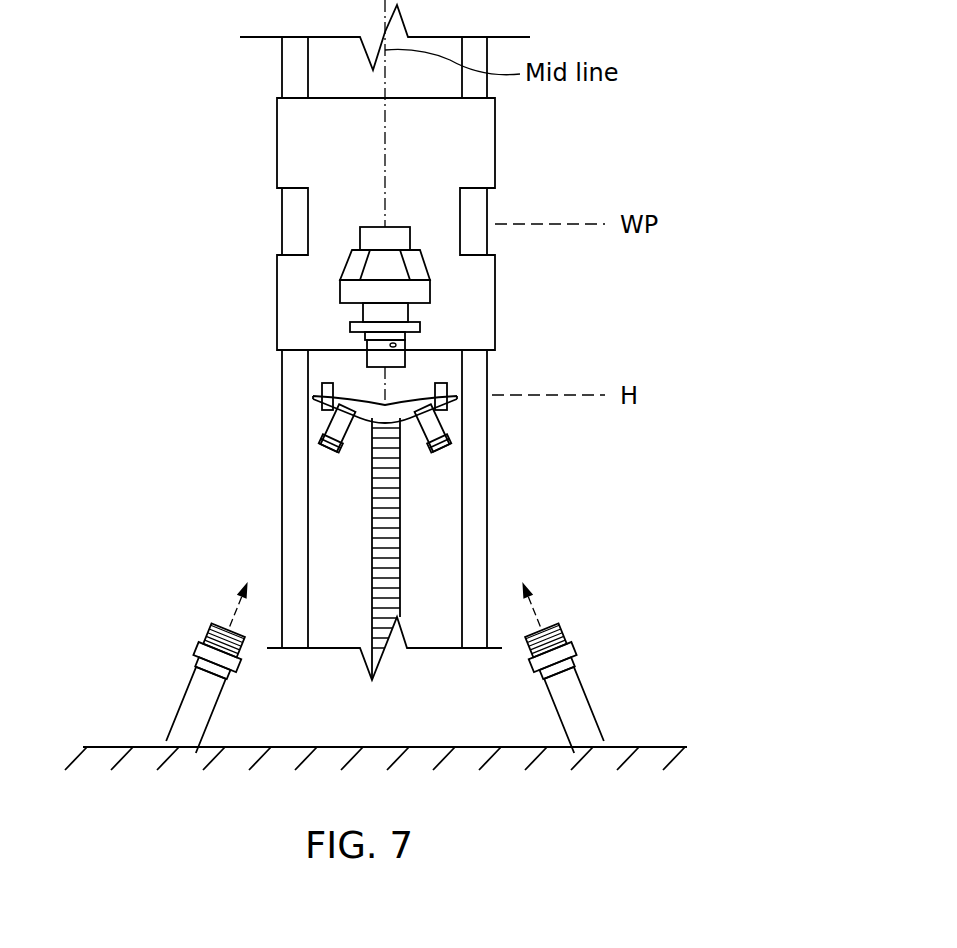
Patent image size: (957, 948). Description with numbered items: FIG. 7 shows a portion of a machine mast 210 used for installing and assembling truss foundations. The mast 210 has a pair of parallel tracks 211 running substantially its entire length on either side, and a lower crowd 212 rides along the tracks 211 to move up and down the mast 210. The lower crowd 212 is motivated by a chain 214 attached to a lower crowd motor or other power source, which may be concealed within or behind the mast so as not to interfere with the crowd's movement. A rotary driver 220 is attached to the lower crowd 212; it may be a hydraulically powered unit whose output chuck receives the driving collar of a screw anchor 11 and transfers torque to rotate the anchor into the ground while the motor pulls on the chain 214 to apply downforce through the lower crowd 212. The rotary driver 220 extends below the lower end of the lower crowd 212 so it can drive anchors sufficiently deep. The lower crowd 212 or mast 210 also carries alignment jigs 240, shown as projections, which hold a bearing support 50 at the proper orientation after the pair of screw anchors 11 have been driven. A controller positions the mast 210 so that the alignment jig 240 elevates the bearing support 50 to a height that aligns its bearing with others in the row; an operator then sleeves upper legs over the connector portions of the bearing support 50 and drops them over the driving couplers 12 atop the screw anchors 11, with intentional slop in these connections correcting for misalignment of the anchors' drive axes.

The mast 210 is at (664, 62).
The tracks 211 is at (300, 57).
The lower crowd 212 is at (495, 135).
The rotary driver 220 is at (338, 257).
The alignment jig 240 is at (450, 403).
The bearing support 50 is at (452, 460).
The chain 214 is at (400, 522).
The driving coupler 12 is at (200, 620).
The screw anchor 11 is at (177, 698).